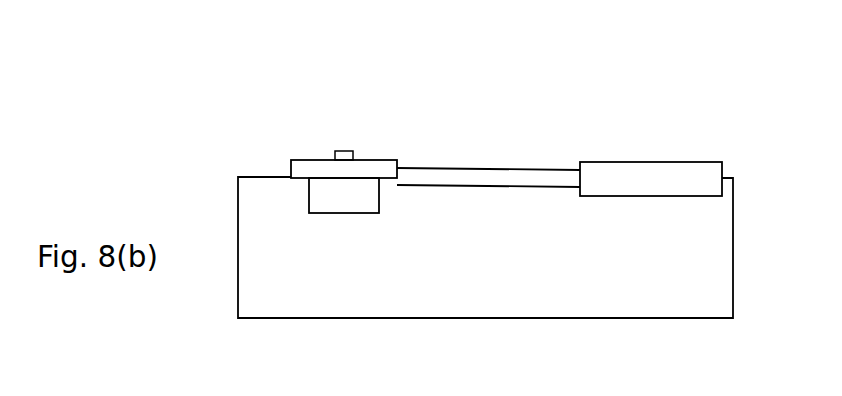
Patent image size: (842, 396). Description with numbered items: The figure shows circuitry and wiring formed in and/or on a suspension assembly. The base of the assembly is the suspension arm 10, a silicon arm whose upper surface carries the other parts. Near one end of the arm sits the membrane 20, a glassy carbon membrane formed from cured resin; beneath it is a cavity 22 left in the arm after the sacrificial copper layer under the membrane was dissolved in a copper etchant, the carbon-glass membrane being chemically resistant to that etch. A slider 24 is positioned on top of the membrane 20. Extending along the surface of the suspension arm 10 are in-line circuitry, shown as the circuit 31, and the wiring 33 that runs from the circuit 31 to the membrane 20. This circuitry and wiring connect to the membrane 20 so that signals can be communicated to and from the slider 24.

The suspension arm 10 is at (642, 280).
The membrane 20 is at (378, 167).
The cavity 22 is at (340, 203).
The slider 24 is at (340, 151).
The circuit 31 is at (625, 173).
The wiring 33 is at (452, 172).